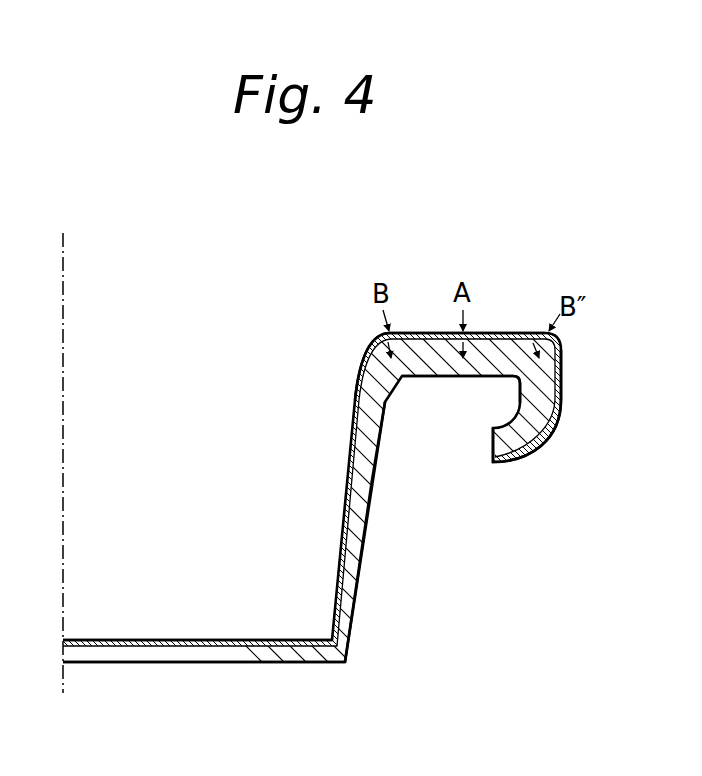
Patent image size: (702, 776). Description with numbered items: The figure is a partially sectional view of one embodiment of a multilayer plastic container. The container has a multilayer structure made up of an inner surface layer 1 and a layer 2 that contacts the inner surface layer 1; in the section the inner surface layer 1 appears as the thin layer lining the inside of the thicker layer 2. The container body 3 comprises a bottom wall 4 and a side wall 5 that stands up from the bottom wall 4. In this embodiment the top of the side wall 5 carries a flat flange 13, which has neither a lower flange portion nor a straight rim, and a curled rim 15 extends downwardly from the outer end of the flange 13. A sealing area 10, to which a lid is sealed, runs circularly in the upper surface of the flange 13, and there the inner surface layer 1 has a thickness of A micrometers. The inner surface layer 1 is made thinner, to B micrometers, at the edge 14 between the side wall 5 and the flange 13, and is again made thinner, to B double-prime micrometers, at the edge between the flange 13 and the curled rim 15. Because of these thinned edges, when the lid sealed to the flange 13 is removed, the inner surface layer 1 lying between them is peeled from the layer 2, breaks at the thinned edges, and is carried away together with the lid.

The inner surface layer 1 is at (348, 491).
The layer contacting the inner surface layer 2 is at (365, 488).
The container body 3 is at (363, 548).
The bottom wall 4 is at (192, 640).
The side wall 5 is at (342, 546).
The sealing area 10 is at (490, 333).
The flat flange 13 is at (455, 378).
The edge between the side wall and the flange 14 is at (393, 331).
The curled rim 15 is at (563, 401).